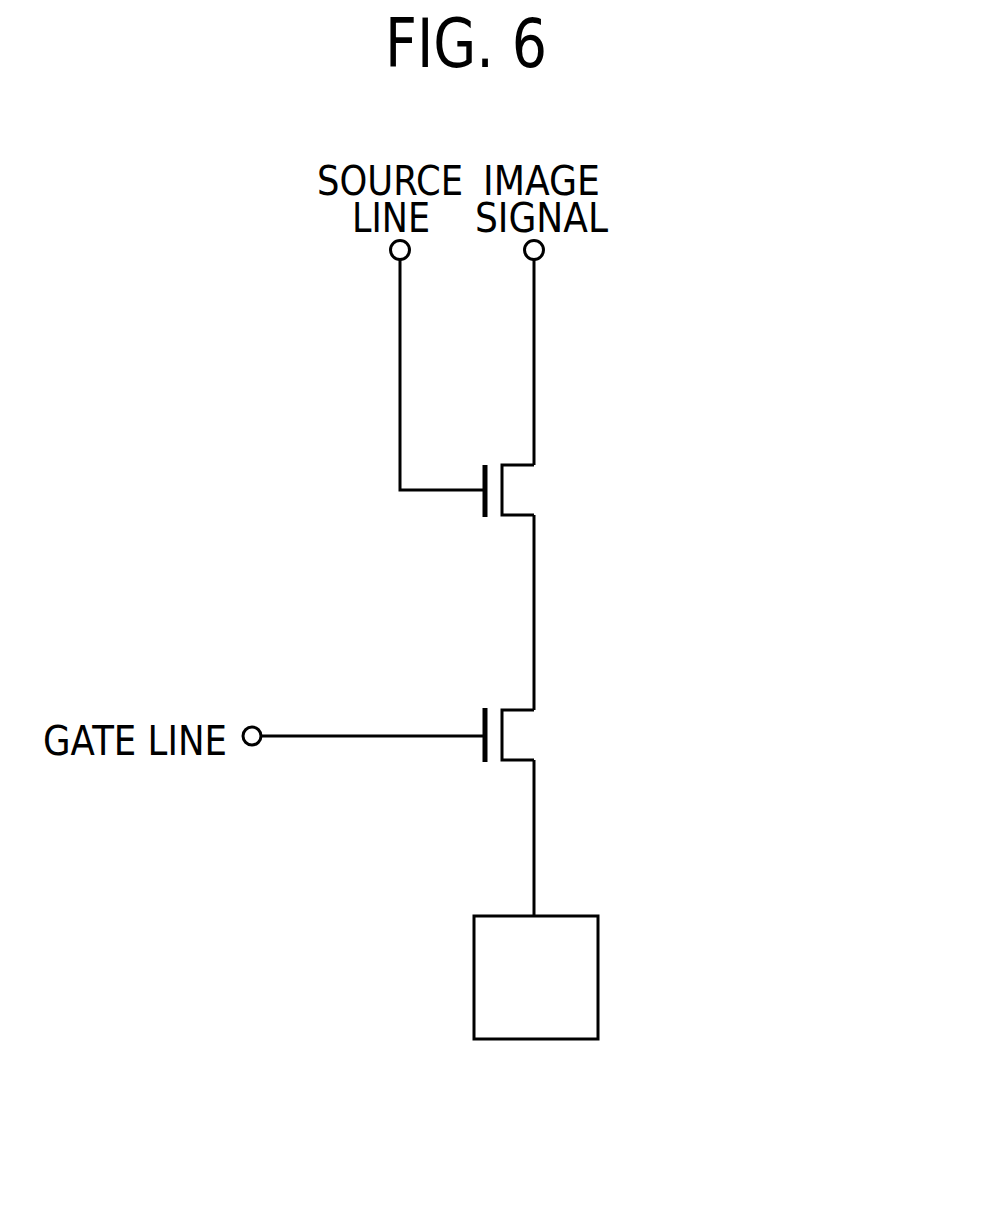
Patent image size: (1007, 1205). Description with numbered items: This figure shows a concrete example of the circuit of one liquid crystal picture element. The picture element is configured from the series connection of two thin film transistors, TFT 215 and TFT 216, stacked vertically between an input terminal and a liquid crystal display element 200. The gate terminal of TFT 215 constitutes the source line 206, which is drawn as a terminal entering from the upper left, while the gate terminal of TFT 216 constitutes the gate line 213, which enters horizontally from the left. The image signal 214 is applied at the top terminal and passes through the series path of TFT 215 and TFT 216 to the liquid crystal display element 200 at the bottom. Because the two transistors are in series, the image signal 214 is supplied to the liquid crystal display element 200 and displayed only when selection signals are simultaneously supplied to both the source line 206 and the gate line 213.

The source line 206 is at (397, 352).
The image signal 214 is at (537, 343).
The TFT 215 is at (523, 493).
The gate line 213 is at (312, 732).
The TFT 216 is at (520, 747).
The liquid crystal display element 200 is at (598, 992).